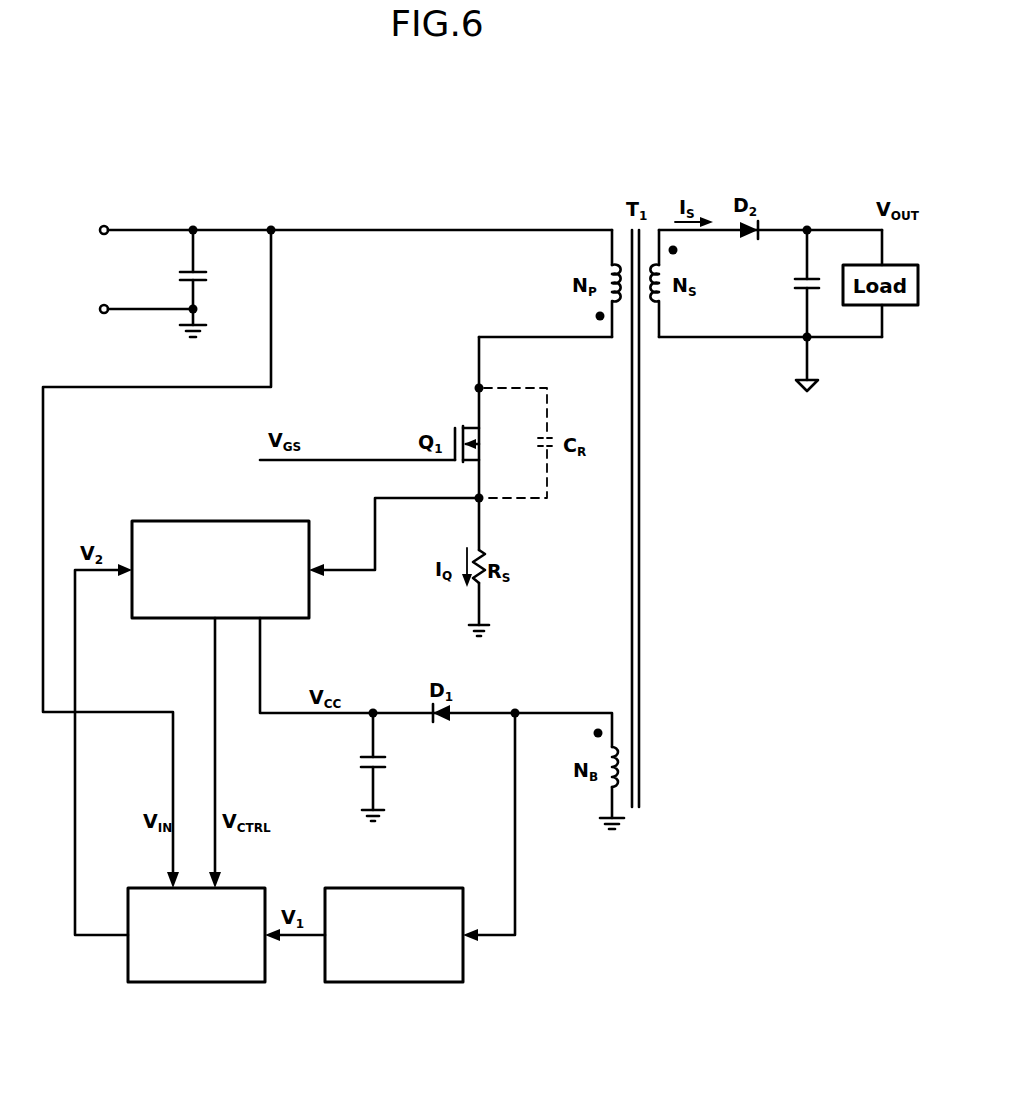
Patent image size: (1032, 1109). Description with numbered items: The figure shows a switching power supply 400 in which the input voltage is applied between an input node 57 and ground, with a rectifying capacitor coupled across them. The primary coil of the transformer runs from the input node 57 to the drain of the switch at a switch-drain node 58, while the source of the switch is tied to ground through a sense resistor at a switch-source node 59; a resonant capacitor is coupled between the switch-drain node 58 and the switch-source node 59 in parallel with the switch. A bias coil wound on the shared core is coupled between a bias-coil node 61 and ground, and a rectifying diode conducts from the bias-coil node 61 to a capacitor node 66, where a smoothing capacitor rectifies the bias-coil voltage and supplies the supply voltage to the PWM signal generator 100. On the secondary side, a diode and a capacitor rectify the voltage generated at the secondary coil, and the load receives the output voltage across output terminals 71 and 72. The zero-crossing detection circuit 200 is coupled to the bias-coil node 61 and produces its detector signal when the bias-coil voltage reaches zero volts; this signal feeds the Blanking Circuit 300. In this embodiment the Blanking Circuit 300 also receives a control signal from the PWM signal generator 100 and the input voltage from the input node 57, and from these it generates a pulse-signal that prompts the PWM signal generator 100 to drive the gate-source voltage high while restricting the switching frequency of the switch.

The switching power supply 400 is at (356, 202).
The input node 57 is at (204, 267).
The switch-drain node 58 is at (462, 382).
The switch-source node 59 is at (410, 518).
The bias-coil node 61 is at (519, 813).
The capacitor node 66 is at (387, 754).
The output terminal 71 is at (798, 267).
The output terminal 72 is at (817, 362).
The PWM signal generator 100 is at (172, 521).
The zero-crossing detection circuit 200 is at (370, 983).
The Blanking Circuit 300 is at (170, 983).